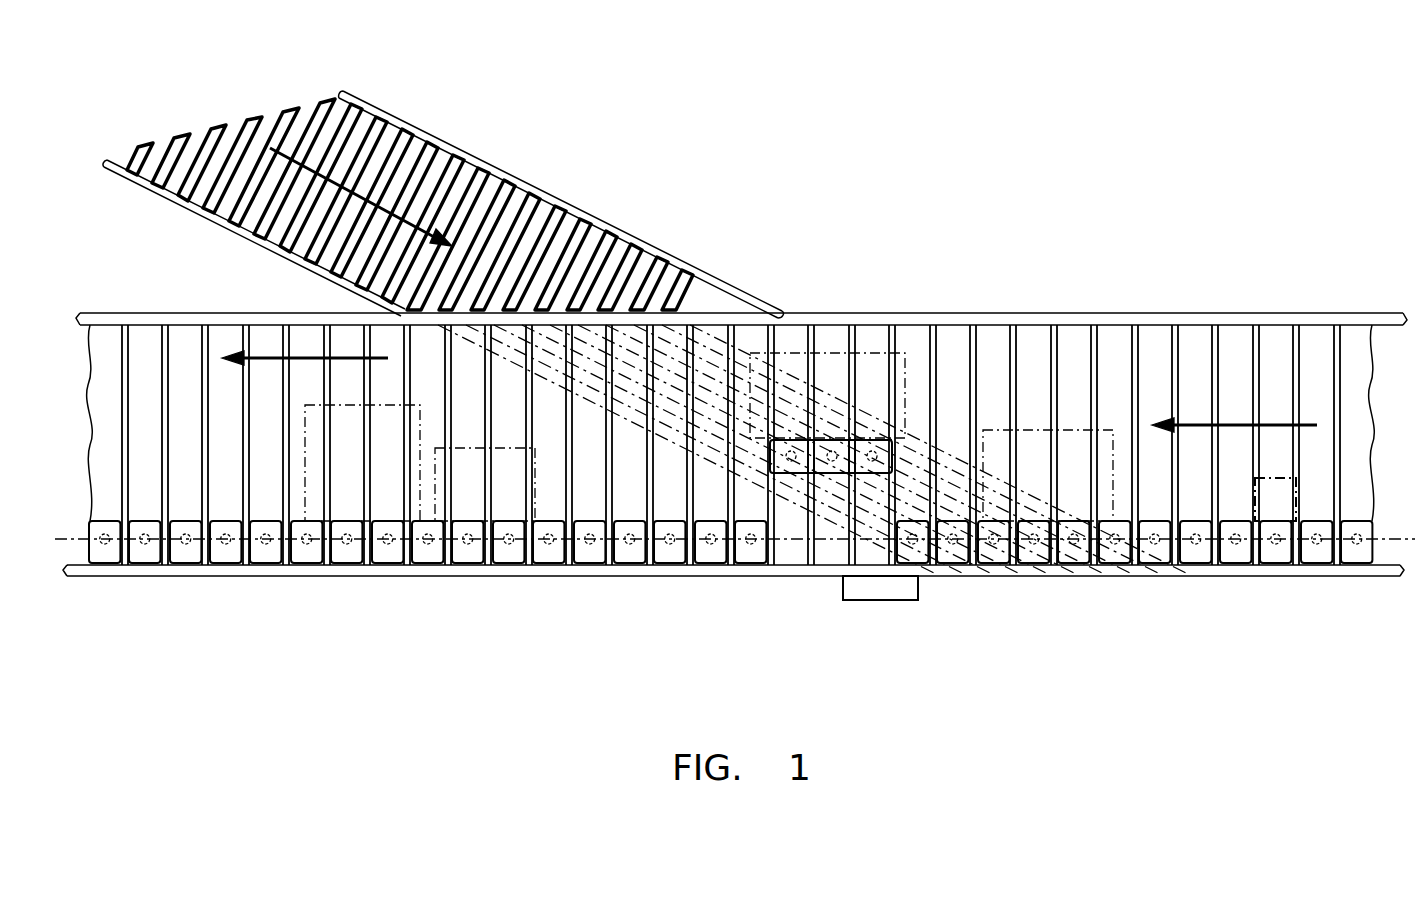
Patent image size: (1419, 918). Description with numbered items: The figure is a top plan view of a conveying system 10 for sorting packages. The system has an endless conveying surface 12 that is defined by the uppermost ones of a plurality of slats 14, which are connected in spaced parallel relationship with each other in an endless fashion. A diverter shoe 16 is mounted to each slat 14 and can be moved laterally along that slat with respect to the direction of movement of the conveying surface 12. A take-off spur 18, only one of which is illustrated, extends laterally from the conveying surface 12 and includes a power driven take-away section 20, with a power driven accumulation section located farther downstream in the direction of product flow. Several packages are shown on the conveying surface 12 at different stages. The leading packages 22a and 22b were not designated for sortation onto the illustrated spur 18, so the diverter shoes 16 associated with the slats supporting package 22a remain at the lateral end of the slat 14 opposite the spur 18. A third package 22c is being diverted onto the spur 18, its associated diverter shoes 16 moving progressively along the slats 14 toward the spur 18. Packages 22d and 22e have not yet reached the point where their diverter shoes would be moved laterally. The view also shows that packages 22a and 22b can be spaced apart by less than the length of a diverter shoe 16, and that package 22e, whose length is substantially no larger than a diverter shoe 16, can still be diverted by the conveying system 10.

The conveying system 10 is at (1279, 230).
The endless conveying surface 12 is at (1040, 350).
The slats 14 is at (307, 333).
The diverter shoe 16 is at (300, 552).
The take-off spur 18 is at (245, 240).
The take-away section 20 is at (440, 137).
The package 22a is at (425, 495).
The package 22b is at (533, 490).
The package 22c is at (827, 355).
The package 22d is at (1118, 490).
The package 22e is at (1300, 500).